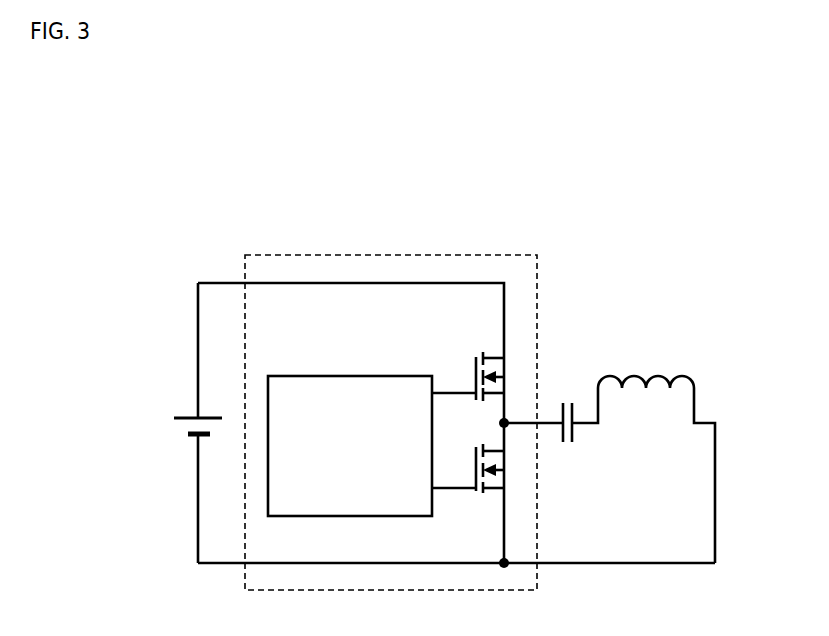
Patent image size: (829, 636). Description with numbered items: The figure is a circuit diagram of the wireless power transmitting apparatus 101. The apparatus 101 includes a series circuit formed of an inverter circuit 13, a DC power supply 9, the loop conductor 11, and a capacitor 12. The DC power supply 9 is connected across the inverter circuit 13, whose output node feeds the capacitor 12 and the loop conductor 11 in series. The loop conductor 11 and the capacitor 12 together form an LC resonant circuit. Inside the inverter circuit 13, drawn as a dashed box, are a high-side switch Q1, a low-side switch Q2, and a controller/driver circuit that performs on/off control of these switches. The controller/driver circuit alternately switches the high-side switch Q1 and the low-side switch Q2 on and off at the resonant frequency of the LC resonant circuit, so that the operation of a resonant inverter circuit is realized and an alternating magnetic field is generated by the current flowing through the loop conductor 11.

The wireless power transmitting apparatus 101 is at (712, 195).
The DC power supply 9 is at (178, 416).
The inverter circuit 13 is at (538, 256).
The capacitor 12 is at (568, 402).
The loop conductor 11 is at (658, 373).
The high-side switch Q1 is at (468, 363).
The low-side switch Q2 is at (468, 456).